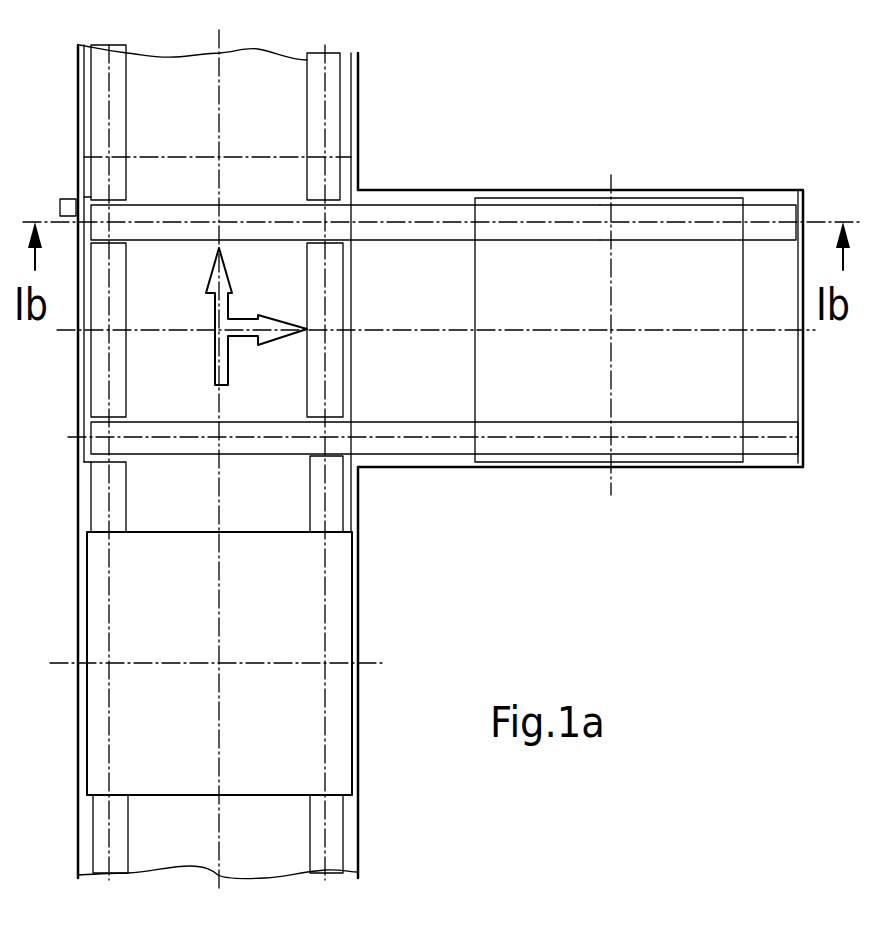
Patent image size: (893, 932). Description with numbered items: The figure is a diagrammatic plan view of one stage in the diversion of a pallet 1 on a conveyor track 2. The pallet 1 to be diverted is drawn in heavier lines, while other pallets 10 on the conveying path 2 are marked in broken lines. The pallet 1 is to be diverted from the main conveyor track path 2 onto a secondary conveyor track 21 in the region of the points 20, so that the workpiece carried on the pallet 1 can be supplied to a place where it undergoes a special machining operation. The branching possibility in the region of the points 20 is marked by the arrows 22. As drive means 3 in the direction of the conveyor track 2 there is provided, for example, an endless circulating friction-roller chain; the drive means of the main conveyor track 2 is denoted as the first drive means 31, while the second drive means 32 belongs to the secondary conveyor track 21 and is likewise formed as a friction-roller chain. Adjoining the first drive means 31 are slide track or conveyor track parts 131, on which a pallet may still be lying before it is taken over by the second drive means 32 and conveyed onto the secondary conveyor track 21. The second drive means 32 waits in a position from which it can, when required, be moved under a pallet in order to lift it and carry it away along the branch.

The pallet 1 is at (347, 650).
The conveyor track 2 is at (83, 487).
The drive means 3 is at (333, 68).
The pallets 10 is at (444, 249).
The points 20 is at (66, 379).
The secondary conveyor track 21 is at (449, 217).
The arrows 22 is at (223, 337).
The first drive means 31 is at (338, 507).
The second drive means 32 is at (708, 215).
The slide track or conveyor track parts 131 is at (118, 294).